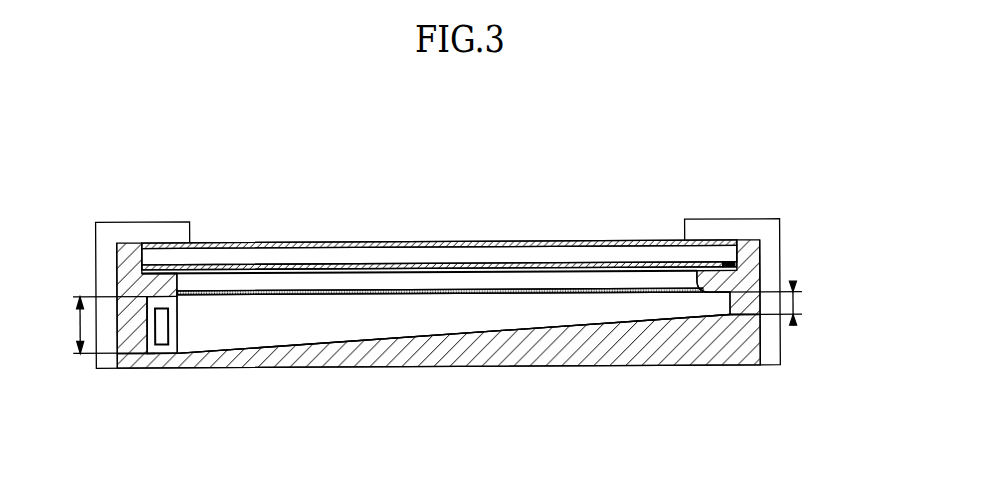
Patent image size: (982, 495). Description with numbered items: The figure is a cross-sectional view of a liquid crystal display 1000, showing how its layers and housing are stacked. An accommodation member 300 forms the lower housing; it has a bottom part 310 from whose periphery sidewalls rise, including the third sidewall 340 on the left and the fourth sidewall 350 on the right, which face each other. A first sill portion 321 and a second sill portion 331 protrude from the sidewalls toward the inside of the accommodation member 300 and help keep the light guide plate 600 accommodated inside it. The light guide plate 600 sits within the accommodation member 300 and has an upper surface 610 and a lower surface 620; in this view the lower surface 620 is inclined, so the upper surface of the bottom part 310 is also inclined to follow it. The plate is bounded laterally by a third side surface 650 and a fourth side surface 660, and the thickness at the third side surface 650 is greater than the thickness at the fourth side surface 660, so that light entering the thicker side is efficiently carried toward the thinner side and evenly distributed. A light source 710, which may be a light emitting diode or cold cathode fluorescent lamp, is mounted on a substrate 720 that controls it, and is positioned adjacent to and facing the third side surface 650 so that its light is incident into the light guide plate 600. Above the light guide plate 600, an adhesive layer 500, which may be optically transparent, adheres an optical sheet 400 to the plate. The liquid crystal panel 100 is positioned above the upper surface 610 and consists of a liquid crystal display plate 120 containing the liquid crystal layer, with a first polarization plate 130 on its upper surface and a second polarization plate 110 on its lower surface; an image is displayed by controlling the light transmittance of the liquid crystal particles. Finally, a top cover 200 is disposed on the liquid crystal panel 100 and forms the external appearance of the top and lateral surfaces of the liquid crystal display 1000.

The liquid crystal display 1000 is at (517, 110).
The liquid crystal panel 100 is at (515, 252).
The second polarization plate 110 is at (731, 242).
The liquid crystal display plate 120 is at (738, 254).
The first polarization plate 130 is at (737, 268).
The top cover 200 is at (95, 249).
The accommodation member 300 is at (438, 331).
The bottom part 310 is at (431, 355).
The first sill portion 321 is at (161, 274).
The second sill portion 331 is at (713, 274).
The third sidewall 340 is at (133, 341).
The fourth sidewall 350 is at (745, 339).
The optical sheet 400 is at (567, 279).
The adhesive layer 500 is at (620, 290).
The light guide plate 600 is at (518, 312).
The upper surface 610 is at (582, 296).
The lower surface 620 is at (632, 323).
The third side surface 650 is at (169, 343).
The fourth side surface 660 is at (731, 306).
The light source 710 is at (166, 318).
The substrate 720 is at (150, 316).